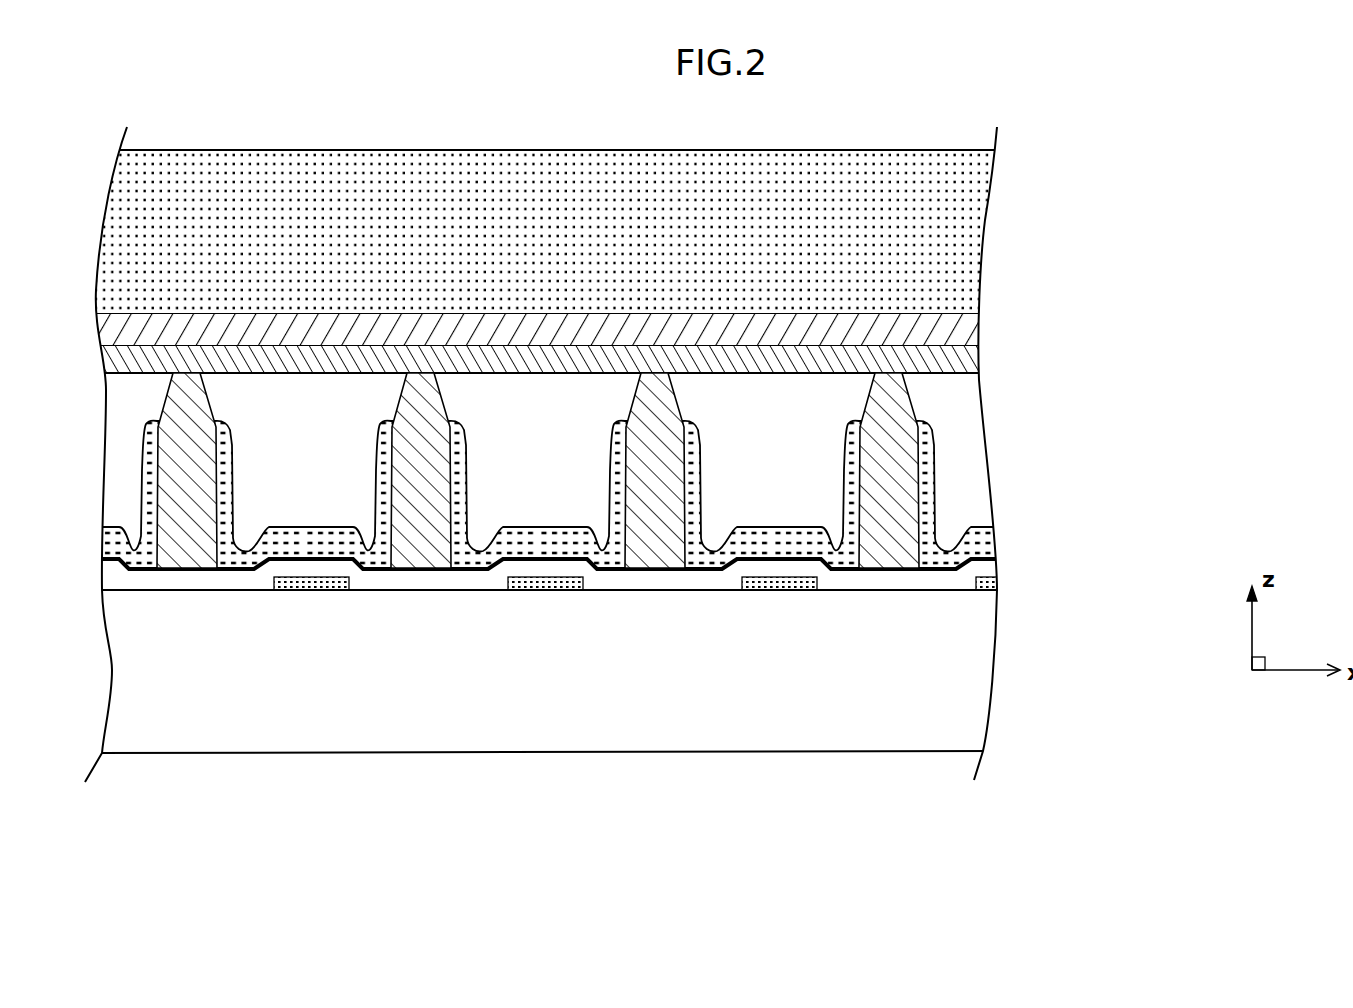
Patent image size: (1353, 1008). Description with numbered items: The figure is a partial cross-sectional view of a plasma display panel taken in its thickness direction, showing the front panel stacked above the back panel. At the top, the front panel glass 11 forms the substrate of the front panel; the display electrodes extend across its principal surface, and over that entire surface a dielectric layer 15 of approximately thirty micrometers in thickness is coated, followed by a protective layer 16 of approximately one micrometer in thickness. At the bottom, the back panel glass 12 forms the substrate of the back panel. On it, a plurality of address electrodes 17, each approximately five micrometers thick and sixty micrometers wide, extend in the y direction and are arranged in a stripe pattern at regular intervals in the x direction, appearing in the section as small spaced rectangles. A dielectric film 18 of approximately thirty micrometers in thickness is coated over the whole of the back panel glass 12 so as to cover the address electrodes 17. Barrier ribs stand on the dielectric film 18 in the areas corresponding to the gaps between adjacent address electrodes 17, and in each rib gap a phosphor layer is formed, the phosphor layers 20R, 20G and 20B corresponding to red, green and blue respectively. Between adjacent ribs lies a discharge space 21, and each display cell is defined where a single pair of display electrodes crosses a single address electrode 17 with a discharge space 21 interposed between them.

The front panel glass 11 is at (967, 227).
The back panel glass 12 is at (955, 718).
The dielectric layer 15 is at (973, 331).
The protective layer 16 is at (978, 366).
The address electrodes 17 is at (998, 584).
The dielectric film 18 is at (980, 570).
The discharge space 21 is at (597, 640).
The phosphor layer 20R is at (266, 563).
The phosphor layer 20G is at (498, 547).
The phosphor layer 20B is at (722, 573).